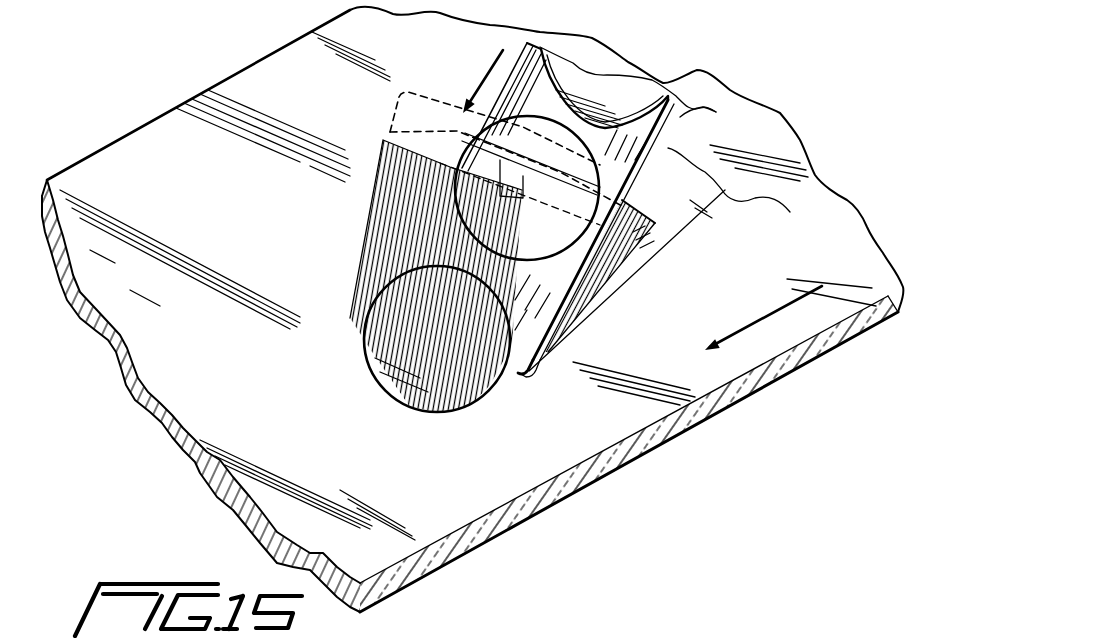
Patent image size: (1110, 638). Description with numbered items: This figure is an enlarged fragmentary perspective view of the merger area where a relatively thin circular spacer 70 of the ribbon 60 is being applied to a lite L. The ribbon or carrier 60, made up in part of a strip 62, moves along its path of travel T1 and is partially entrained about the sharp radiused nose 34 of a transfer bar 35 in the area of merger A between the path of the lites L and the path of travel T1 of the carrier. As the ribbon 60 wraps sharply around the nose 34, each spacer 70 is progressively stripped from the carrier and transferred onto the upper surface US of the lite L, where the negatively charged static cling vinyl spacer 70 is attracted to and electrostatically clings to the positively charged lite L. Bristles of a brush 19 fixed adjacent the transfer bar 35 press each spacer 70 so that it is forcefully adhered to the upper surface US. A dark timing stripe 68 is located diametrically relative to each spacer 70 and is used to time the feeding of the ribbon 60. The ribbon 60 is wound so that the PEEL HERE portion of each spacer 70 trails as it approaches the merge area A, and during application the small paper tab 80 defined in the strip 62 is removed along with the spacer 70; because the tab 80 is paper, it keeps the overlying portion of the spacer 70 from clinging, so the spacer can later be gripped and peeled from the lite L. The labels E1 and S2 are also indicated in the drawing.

The lite L is at (258, 83).
The upper surface US is at (220, 226).
The brush 19 is at (374, 195).
The ribbon 60 is at (681, 85).
The strip 62 is at (746, 165).
The dark timing stripe 68 is at (640, 186).
The transfer bar 35 is at (598, 283).
The sharp radiused nose 34 is at (538, 347).
The spacer 70 is at (612, 102).
The area of merger A is at (450, 423).
The tab 80 is at (388, 124).
The path of travel T1 is at (827, 387).
The edge E1 is at (640, 637).
The sheet S2 is at (855, 637).